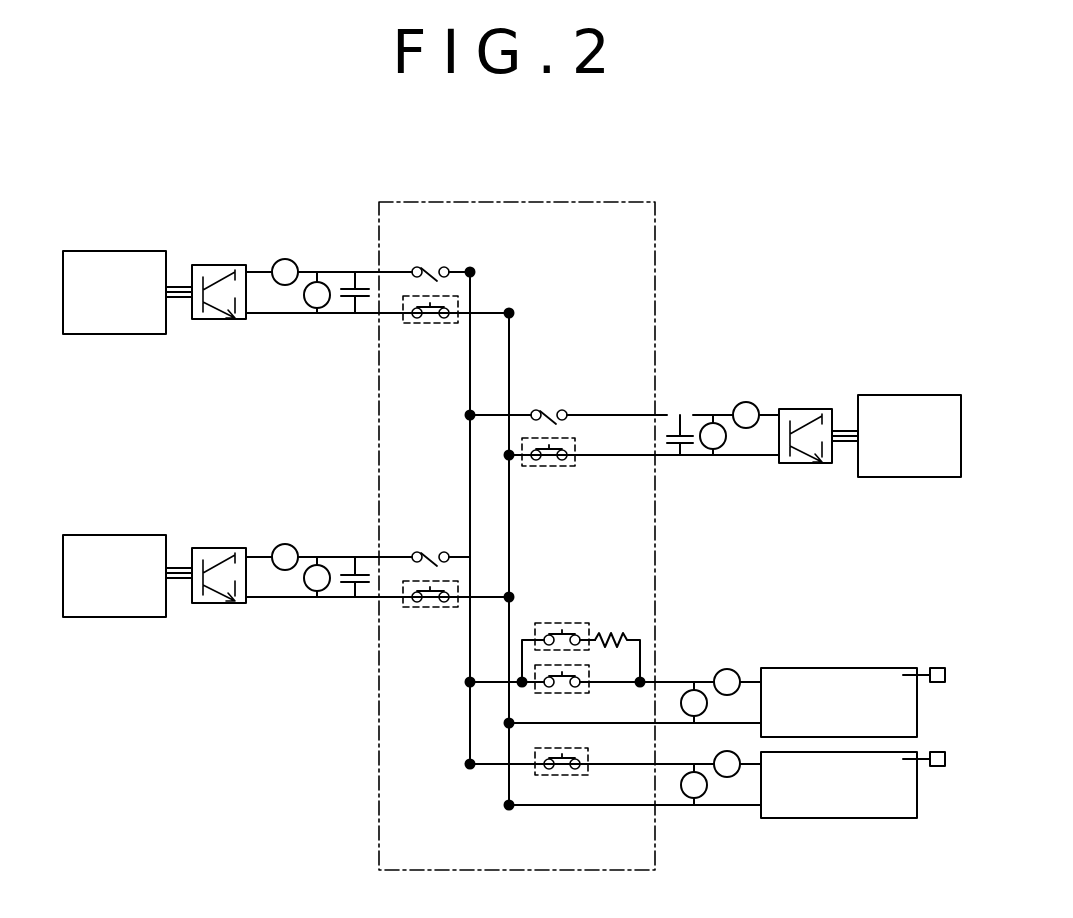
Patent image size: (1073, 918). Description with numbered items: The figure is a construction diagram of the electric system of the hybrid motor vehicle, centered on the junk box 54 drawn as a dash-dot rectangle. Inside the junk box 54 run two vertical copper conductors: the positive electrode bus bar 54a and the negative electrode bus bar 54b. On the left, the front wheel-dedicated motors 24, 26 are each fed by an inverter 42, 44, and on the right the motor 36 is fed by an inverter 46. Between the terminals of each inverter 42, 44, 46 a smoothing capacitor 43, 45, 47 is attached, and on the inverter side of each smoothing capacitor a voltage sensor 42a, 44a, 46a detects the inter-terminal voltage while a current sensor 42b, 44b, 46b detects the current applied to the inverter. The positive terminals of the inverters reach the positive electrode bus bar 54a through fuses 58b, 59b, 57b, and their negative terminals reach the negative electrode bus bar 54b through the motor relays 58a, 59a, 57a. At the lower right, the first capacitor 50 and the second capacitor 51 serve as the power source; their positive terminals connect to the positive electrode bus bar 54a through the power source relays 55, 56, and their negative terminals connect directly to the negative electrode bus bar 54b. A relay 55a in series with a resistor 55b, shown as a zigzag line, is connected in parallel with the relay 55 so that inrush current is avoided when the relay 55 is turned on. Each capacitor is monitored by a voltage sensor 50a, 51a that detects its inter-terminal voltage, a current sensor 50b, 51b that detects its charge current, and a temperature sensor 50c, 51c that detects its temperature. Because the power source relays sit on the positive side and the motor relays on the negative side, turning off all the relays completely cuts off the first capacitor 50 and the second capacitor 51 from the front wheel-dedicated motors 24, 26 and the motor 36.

The front wheel-dedicated motor 24 is at (112, 251).
The front wheel-dedicated motor 26 is at (114, 617).
The motor 36 is at (910, 395).
The inverter 42 is at (215, 265).
The voltage sensor 42a is at (317, 272).
The current sensor 42b is at (285, 259).
The smoothing capacitor 43 is at (362, 287).
The inverter 44 is at (215, 603).
The voltage sensor 44a is at (317, 565).
The current sensor 44b is at (285, 544).
The smoothing capacitor 45 is at (350, 584).
The inverter 46 is at (801, 464).
The voltage sensor 46a is at (713, 423).
The current sensor 46b is at (748, 402).
The smoothing capacitor 47 is at (670, 420).
The first capacitor 50 is at (845, 668).
The voltage sensor 50a is at (688, 692).
The current sensor 50b is at (730, 669).
The temperature sensor 50c is at (938, 668).
The second capacitor 51 is at (836, 818).
The voltage sensor 51a is at (684, 797).
The current sensor 51b is at (728, 777).
The temperature sensor 51c is at (938, 767).
The junk box 54 is at (514, 203).
The positive electrode bus bar 54a is at (470, 493).
The negative electrode bus bar 54b is at (509, 495).
The relay 55 is at (566, 695).
The relay 55a is at (565, 621).
The resistor 55b is at (613, 636).
The relay 56 is at (560, 778).
The relay 57a is at (553, 467).
The fuse 57b is at (548, 409).
The relay 58a is at (430, 324).
The fuse 58b is at (429, 266).
The relay 59a is at (430, 608).
The fuse 59b is at (429, 551).